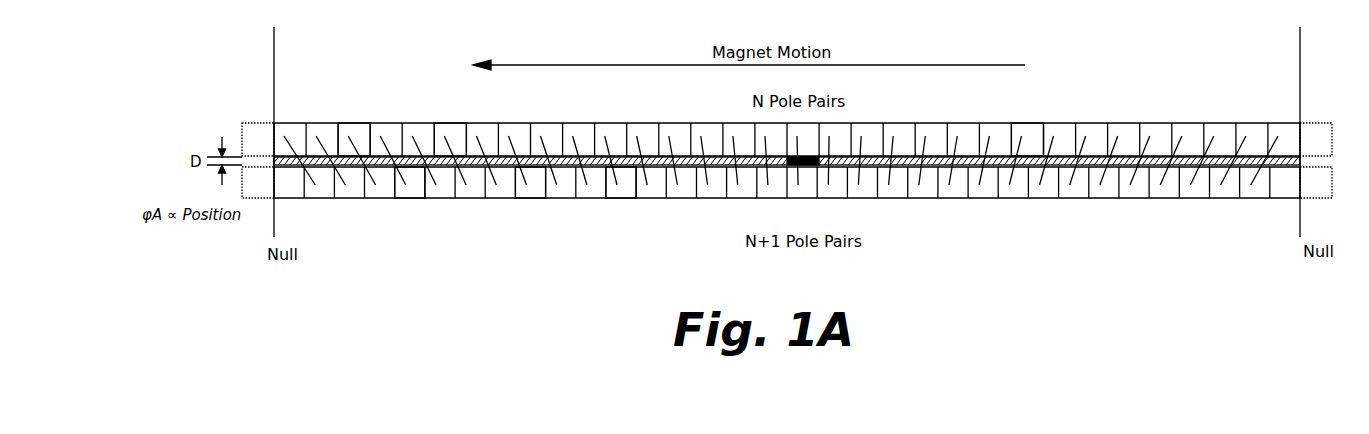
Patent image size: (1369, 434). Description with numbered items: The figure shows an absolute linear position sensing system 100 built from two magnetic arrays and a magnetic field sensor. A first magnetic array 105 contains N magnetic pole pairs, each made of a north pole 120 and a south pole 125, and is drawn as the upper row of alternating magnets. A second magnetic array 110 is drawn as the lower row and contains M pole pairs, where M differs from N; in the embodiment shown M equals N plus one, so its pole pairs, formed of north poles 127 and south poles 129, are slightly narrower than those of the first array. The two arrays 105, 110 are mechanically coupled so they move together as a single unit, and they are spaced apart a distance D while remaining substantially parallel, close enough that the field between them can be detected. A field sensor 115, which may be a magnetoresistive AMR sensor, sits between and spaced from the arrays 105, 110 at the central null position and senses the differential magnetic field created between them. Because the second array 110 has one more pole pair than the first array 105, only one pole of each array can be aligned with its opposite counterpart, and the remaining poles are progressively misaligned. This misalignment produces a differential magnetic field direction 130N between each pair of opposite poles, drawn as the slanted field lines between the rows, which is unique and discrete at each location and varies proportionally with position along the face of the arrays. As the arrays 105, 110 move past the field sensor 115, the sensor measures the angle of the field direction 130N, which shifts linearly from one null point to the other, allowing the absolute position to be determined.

The absolute linear position sensing system 100 is at (400, 272).
The first magnetic array 105 is at (1152, 103).
The second magnetic array 110 is at (1088, 216).
The field sensor 115 is at (815, 157).
The north pole 120 is at (347, 130).
The south pole 125 is at (452, 130).
The north pole 127 is at (412, 192).
The south pole 129 is at (620, 193).
The differential magnetic field direction 130N is at (525, 172).